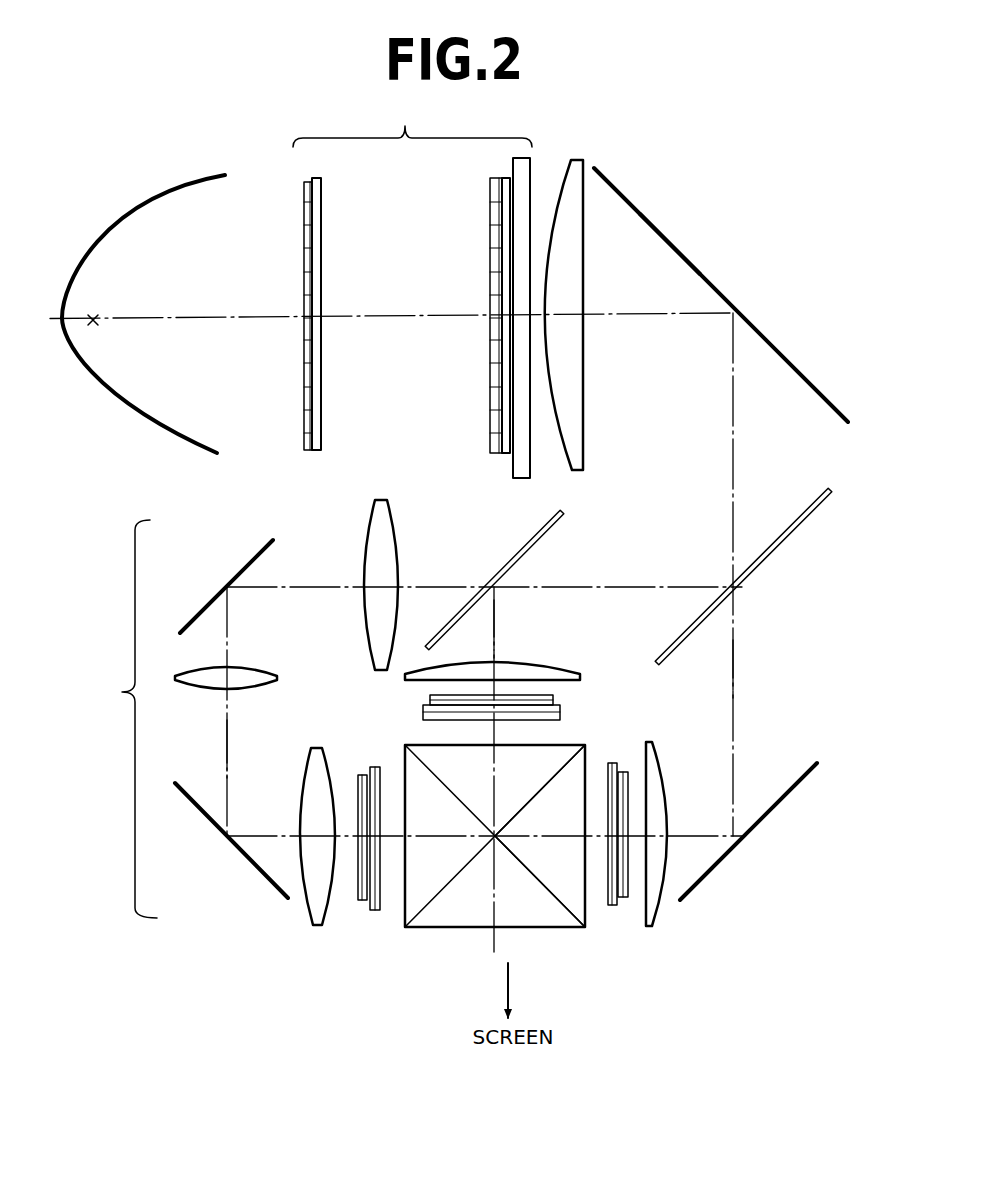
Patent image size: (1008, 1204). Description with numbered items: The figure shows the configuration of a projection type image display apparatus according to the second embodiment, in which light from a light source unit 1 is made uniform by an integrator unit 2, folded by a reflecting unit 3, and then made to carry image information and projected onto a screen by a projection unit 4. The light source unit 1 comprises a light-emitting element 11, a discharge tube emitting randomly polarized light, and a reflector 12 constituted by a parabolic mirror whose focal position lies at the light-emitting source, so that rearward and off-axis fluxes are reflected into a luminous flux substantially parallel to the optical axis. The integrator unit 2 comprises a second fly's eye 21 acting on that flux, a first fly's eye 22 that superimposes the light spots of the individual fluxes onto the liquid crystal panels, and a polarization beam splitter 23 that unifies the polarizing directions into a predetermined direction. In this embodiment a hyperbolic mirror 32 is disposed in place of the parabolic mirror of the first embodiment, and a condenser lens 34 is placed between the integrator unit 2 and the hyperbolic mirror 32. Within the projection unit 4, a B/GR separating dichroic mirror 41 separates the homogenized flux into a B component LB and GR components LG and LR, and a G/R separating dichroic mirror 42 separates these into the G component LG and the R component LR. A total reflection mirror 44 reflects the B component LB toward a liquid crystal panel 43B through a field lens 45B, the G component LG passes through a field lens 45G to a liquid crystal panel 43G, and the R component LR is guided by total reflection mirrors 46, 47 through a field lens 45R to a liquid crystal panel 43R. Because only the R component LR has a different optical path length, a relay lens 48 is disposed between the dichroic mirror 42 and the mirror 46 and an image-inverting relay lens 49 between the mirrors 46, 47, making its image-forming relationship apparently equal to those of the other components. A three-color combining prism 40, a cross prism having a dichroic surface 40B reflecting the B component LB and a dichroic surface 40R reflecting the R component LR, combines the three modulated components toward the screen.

The light source unit 1 is at (142, 207).
The light-emitting element 11 is at (95, 313).
The reflector 12 is at (177, 428).
The integrator unit 2 is at (412, 292).
The second fly's eye 21 is at (322, 193).
The first fly's eye 22 is at (490, 193).
The polarization beam splitter 23 is at (518, 168).
The reflecting mirror 3 is at (652, 200).
The hyperbolic mirror 32 is at (657, 232).
The condenser lens 34 is at (570, 395).
The projection unit 4 is at (129, 719).
The B/GR separating dichroic mirror 41 is at (770, 550).
The G/R separating dichroic mirror 42 is at (540, 545).
The liquid crystal panel 43R is at (370, 752).
The liquid crystal panel 43G is at (568, 703).
The liquid crystal panel 43B is at (621, 752).
The total reflection mirror 44 is at (785, 788).
The field lens 45R is at (302, 775).
The field lens 45G is at (578, 676).
The field lens 45B is at (668, 790).
The total reflection mirror 46 is at (272, 548).
The total reflection mirror 47 is at (197, 803).
The relay lens 48 is at (398, 520).
The image-inverting relay lens 49 is at (272, 668).
The three-color combining prism 40 is at (438, 918).
The dichroic surface 40R is at (528, 868).
The dichroic surface 40B is at (540, 780).
The R component LR is at (226, 740).
The G component LG is at (497, 620).
The B component LB is at (737, 672).